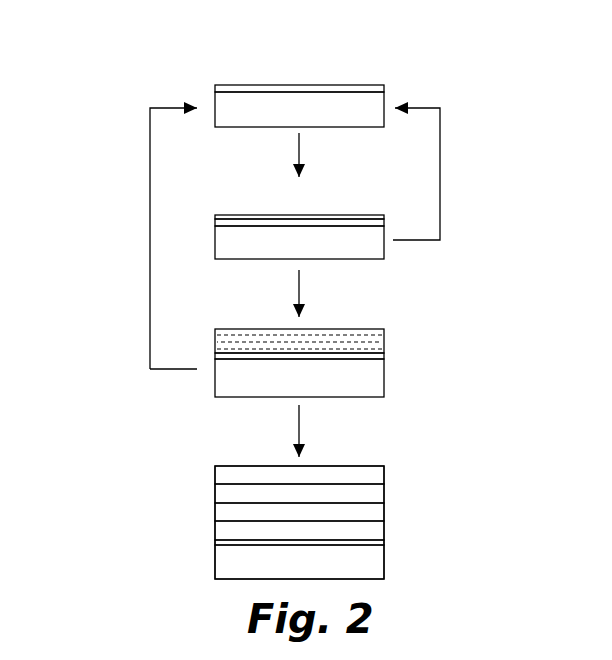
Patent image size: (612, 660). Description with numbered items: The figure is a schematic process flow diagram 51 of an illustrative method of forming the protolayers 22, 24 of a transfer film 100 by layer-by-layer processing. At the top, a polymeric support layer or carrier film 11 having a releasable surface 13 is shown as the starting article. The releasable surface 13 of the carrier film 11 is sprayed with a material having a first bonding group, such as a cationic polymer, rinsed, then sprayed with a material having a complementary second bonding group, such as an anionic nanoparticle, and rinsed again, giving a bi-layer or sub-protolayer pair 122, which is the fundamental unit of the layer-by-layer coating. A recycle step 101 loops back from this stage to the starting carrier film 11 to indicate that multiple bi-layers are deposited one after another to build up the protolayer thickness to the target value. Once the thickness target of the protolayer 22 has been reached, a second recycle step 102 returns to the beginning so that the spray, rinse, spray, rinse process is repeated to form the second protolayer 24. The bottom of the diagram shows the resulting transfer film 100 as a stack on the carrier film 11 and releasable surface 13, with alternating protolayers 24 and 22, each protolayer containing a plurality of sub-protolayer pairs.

The carrier film 11 is at (223, 108).
The releasable surface 13 is at (297, 90).
The sub-protolayer pair 122 is at (352, 217).
The protolayer 22 is at (383, 346).
The protolayer 24 is at (378, 476).
The schematic process flow diagram 51 is at (498, 72).
The transfer film 100 is at (450, 453).
The recycle step 101 is at (466, 157).
The recycle step 102 is at (127, 240).